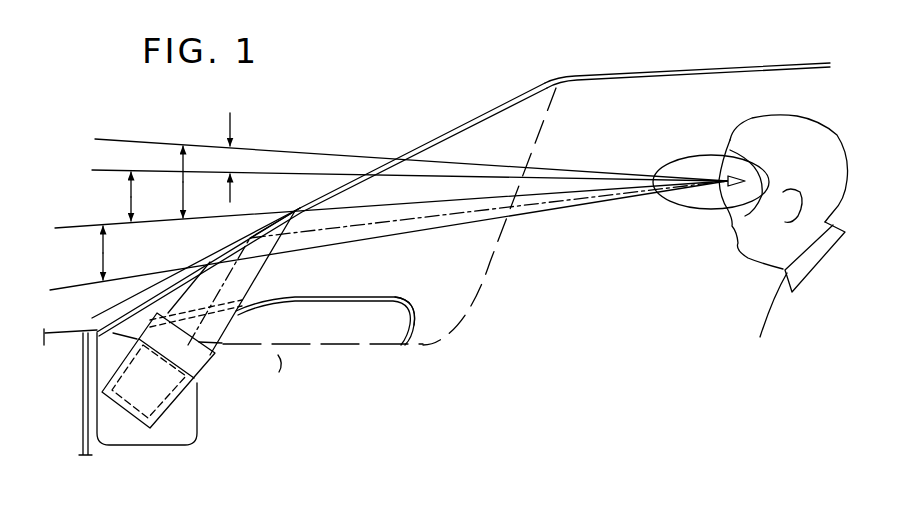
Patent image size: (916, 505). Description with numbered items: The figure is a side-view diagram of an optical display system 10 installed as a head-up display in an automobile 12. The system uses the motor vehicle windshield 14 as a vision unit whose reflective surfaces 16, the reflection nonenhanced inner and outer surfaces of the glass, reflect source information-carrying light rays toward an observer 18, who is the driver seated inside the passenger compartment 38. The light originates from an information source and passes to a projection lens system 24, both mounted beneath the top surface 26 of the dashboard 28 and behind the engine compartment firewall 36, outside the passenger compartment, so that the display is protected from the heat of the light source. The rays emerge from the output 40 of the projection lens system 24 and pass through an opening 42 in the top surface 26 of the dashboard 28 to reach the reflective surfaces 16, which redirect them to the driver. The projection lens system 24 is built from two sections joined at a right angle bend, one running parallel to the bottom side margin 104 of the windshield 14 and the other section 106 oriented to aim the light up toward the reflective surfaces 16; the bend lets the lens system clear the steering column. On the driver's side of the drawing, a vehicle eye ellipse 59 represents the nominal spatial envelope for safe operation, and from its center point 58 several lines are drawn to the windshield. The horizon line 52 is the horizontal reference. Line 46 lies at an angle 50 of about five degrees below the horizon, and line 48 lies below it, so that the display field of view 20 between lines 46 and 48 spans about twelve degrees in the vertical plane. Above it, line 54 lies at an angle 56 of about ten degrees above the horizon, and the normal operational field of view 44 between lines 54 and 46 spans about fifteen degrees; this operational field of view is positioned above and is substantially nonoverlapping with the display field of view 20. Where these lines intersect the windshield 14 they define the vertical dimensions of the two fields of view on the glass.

The optical display system 10 is at (223, 351).
The automobile 12 is at (661, 55).
The windshield 14 is at (413, 146).
The reflective surfaces 16 is at (229, 252).
The observer 18 is at (797, 117).
The display field of view 20 is at (100, 254).
The projection lens system 24 is at (113, 371).
The top surface 26 is at (340, 297).
The dashboard 28 is at (407, 310).
The engine compartment firewall 36 is at (82, 395).
The passenger compartment 38 is at (488, 357).
The output 40 is at (204, 336).
The opening 42 is at (447, 268).
The normal operational field of view 44 is at (181, 199).
The line 46 is at (66, 224).
The line 48 is at (66, 289).
The angle 50 is at (128, 191).
The horizon line 52 is at (100, 167).
The line 54 is at (116, 140).
The angle 56 is at (230, 125).
The point 58 is at (735, 190).
The vehicle eye ellipse 59 is at (700, 153).
The bottom side margin 104 is at (100, 323).
The section 106 is at (133, 400).